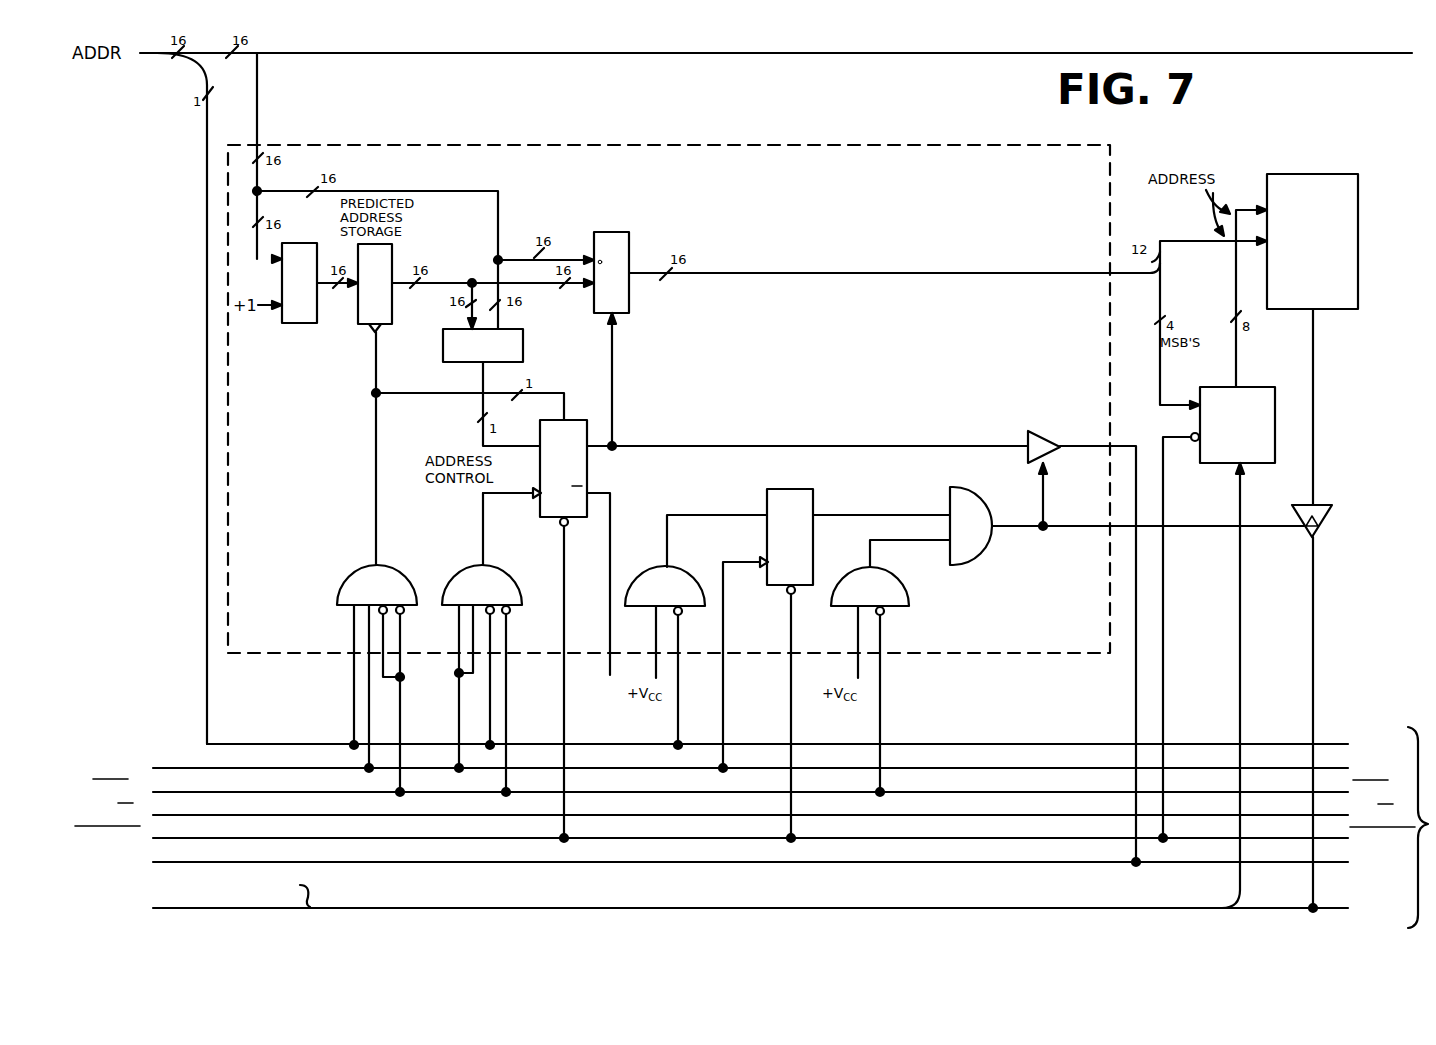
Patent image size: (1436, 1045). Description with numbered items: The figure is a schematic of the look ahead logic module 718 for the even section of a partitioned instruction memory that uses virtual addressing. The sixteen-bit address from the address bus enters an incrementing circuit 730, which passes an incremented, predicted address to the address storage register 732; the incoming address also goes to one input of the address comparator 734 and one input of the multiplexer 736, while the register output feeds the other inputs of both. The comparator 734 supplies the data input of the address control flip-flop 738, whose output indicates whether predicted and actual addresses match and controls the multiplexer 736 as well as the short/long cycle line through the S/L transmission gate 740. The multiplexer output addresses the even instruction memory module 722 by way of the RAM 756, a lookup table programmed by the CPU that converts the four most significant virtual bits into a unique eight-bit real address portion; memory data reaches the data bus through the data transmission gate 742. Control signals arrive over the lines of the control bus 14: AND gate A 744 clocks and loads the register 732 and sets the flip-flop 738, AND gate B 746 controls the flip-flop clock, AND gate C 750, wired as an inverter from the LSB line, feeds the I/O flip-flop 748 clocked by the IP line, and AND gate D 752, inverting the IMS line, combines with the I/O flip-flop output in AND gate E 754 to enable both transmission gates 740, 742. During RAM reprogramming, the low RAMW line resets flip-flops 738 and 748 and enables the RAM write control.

The control bus 14 is at (1435, 684).
The look ahead logic module 718 is at (226, 623).
The even instruction memory module 722 is at (1345, 309).
The incrementing circuit 730 is at (315, 323).
The address storage register 732 is at (393, 310).
The address comparator 734 is at (525, 352).
The multiplexer 736 is at (631, 305).
The address control flip-flop 738 is at (590, 466).
The S/L transmission gate 740 is at (1025, 440).
The data transmission gate 742 is at (1325, 532).
The AND gate A 744 is at (337, 592).
The AND gate B 746 is at (467, 568).
The I/O flip-flop 748 is at (825, 528).
The AND gate C 750 is at (692, 567).
The AND gate D 752 is at (910, 595).
The AND gate E 754 is at (985, 555).
The random access memory (RAM) 756 is at (1245, 466).